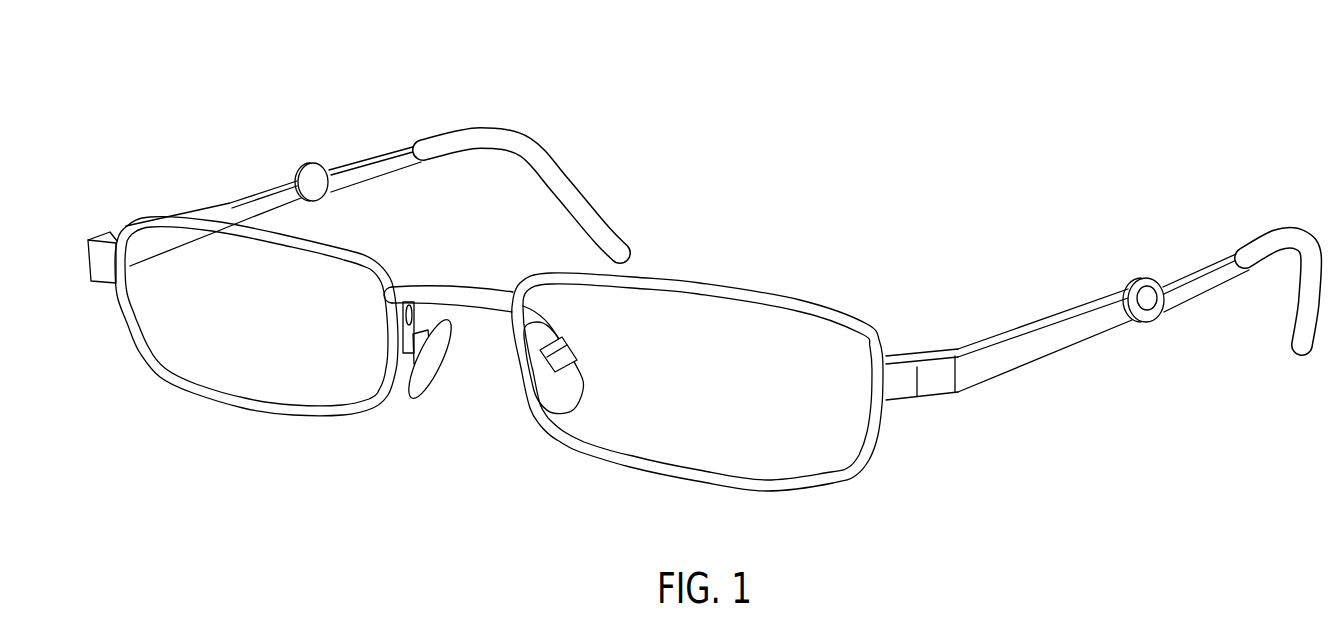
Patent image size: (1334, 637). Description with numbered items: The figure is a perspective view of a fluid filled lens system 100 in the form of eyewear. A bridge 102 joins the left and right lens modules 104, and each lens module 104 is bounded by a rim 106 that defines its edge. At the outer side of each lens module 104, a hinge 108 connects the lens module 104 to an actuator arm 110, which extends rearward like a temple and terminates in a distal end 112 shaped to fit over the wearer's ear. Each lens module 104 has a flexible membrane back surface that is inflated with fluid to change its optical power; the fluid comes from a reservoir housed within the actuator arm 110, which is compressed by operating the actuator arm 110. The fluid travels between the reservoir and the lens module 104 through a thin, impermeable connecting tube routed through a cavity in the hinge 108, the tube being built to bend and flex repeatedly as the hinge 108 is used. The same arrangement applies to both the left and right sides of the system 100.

The fluid filled lens system 100 is at (768, 60).
The bridge 102 is at (458, 293).
The lens module 104 is at (187, 350).
The rim 106 is at (753, 298).
The hinge 108 is at (102, 251).
The actuator arm 110 is at (280, 185).
The distal end 112 is at (534, 150).